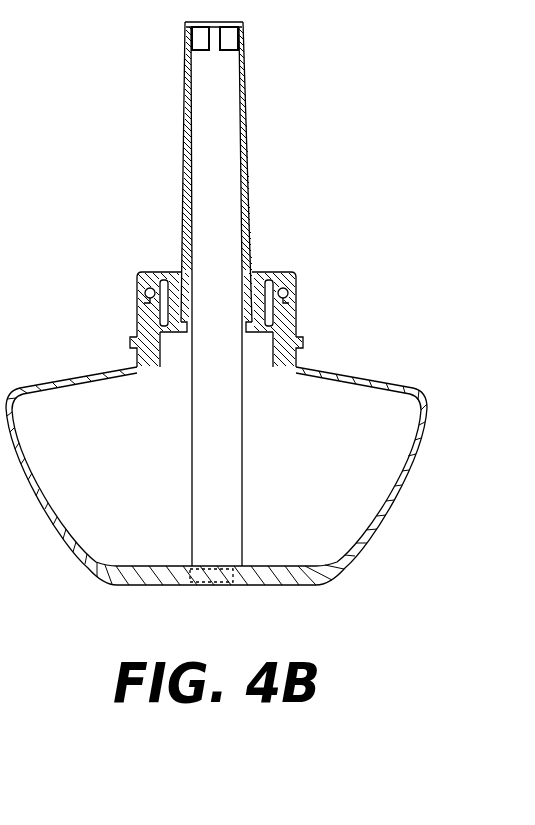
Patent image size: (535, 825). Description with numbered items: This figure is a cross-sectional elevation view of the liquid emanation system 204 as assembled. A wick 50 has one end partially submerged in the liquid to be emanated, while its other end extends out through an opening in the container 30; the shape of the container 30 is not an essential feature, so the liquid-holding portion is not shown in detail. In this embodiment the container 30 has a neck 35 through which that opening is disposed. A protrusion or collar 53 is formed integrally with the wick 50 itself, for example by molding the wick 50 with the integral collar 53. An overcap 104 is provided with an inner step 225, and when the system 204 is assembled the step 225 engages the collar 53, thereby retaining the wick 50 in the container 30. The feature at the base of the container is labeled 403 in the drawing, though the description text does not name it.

The system 204 is at (296, 94).
The overcap 104 is at (178, 119).
The collar 53 is at (220, 300).
The inner step 225 is at (182, 273).
The neck 35 is at (157, 345).
The container 30 is at (347, 363).
The wick 50 is at (243, 440).
The outlet opening 403 is at (200, 585).